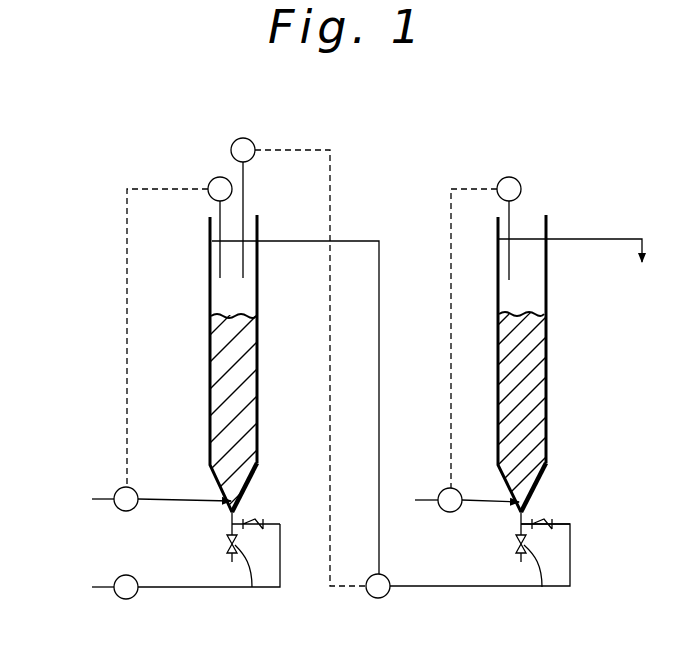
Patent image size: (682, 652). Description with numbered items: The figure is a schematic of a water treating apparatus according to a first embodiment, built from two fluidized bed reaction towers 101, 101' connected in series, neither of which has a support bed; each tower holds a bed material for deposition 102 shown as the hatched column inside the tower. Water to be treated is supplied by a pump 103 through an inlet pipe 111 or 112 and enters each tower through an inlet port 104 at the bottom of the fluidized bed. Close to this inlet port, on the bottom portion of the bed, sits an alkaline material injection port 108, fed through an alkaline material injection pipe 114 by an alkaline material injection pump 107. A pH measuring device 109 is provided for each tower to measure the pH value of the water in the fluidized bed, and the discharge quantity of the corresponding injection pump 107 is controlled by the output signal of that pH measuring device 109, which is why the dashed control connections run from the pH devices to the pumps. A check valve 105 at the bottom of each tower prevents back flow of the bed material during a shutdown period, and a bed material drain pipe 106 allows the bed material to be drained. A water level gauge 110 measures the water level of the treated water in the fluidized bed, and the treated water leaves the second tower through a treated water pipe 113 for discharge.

The fluidized bed reaction tower 101 is at (265, 337).
The fluidized bed reaction tower 101' is at (559, 356).
The bed material for deposition 102 is at (238, 395).
The pump of the water to be treated 103 is at (115, 578).
The inlet port for the water to be treated 104 is at (243, 512).
The check valve 105 is at (253, 520).
The bed material drain pipe 106 is at (250, 587).
The alkaline material injection pump 107 is at (117, 493).
The alkaline material injection port 108 is at (223, 505).
The pH measuring device 109 is at (208, 183).
The water level gauge 110 is at (233, 148).
The inlet pipe for the water to be treated 111 is at (210, 587).
The inlet pipe for the water to be treated 112 is at (380, 362).
The treated water pipe 113 is at (582, 238).
The alkaline material injection pipe 114 is at (178, 497).